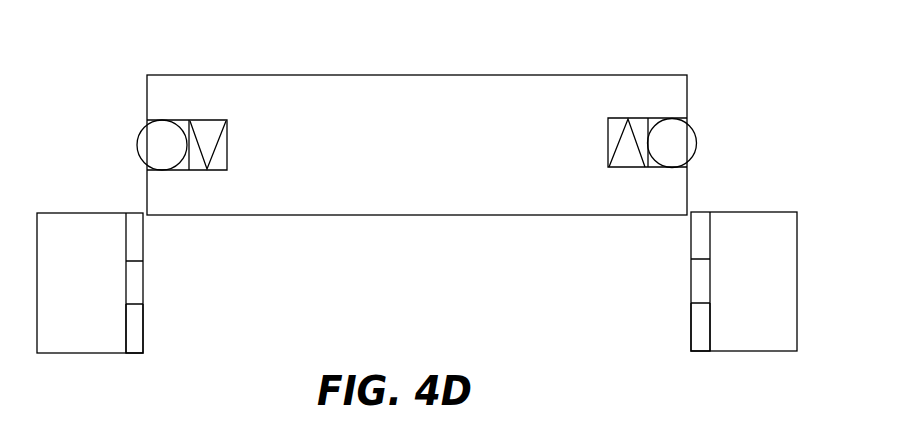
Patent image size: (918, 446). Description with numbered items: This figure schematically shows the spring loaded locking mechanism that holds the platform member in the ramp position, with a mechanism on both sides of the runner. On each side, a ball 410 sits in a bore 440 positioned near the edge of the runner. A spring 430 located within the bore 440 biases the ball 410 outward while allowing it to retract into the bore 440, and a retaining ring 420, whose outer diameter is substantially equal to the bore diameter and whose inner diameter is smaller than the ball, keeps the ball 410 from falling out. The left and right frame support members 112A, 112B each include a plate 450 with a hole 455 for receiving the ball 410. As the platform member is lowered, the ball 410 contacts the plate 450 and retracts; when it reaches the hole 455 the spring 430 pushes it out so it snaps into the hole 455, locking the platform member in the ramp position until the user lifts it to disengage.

The left frame support member 112A is at (82, 232).
The right frame support member 112B is at (753, 230).
The ball 410 is at (145, 138).
The retaining ring 420 is at (148, 120).
The spring 430 is at (207, 170).
The bore 440 is at (210, 120).
The plate 450 is at (145, 332).
The hole 455 is at (135, 285).